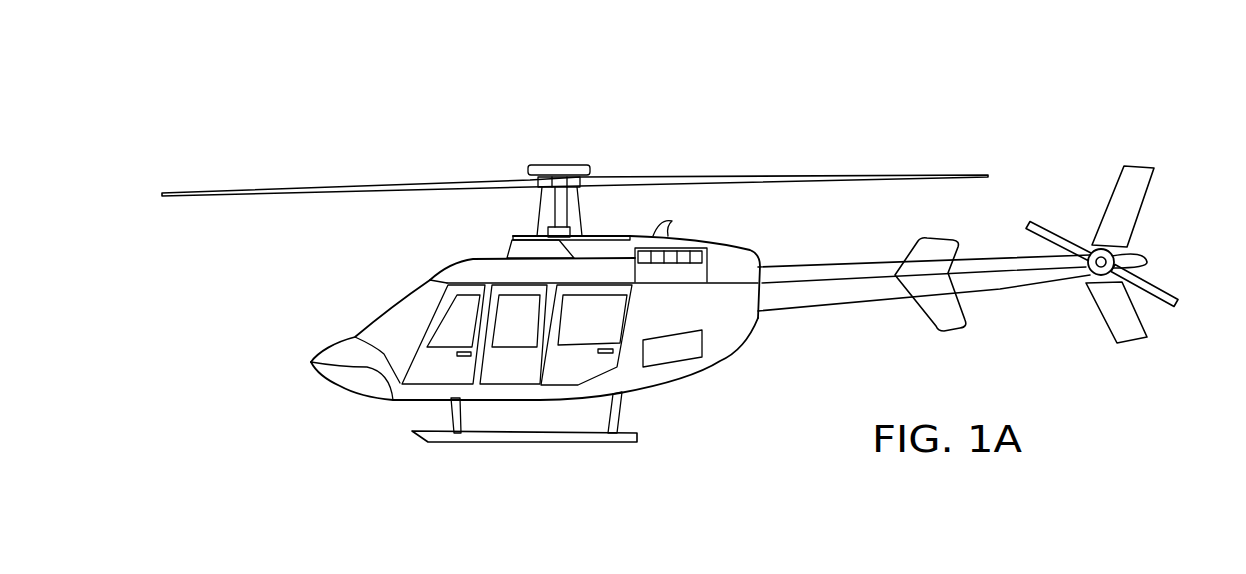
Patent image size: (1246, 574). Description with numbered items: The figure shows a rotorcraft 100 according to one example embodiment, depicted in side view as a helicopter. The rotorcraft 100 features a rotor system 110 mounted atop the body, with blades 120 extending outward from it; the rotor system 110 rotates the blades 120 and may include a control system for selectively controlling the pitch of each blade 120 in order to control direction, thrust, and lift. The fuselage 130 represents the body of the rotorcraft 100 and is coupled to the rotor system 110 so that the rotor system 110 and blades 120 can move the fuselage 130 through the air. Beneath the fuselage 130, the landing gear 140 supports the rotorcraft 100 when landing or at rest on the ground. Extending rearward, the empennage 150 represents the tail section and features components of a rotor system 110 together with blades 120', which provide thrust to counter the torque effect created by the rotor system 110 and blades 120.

The rotorcraft 100 is at (406, 120).
The rotor system 110 is at (558, 165).
The blades 120 is at (575, 156).
The blades 120' is at (1119, 254).
The fuselage 130 is at (353, 395).
The landing gear 140 is at (503, 443).
The empennage 150 is at (835, 308).